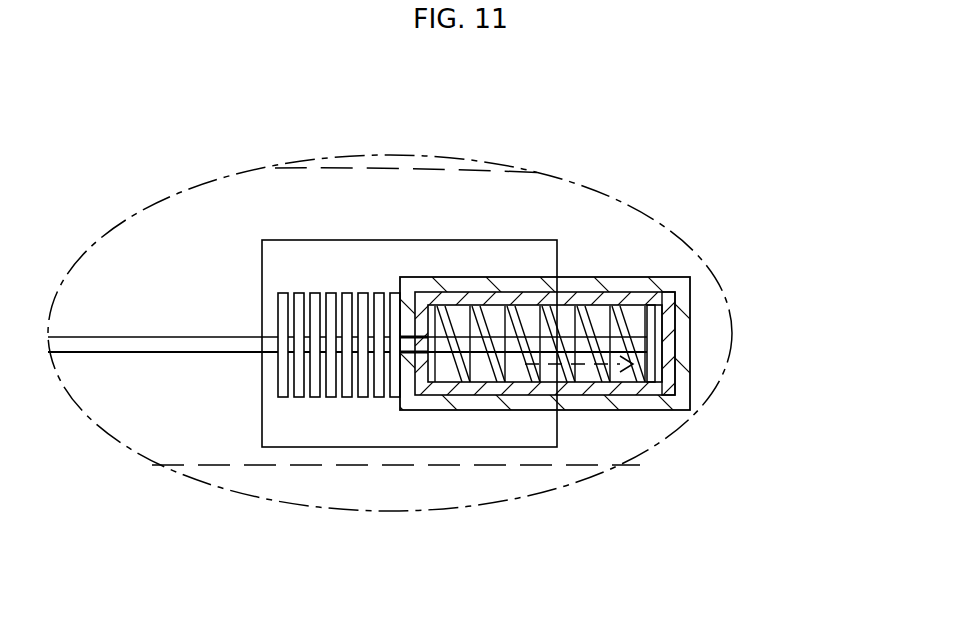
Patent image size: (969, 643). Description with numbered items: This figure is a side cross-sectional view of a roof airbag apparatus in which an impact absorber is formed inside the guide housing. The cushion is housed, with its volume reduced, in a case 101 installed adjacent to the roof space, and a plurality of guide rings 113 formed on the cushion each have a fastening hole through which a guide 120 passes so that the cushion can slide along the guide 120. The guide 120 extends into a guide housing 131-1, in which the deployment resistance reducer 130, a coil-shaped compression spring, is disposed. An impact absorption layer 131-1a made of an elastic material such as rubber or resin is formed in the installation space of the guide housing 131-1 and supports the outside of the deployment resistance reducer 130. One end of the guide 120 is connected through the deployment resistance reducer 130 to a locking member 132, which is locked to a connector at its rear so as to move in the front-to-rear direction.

The case 101 is at (384, 263).
The guide rings 113 is at (318, 398).
The guide 120 is at (151, 342).
The deployment resistance reducer 130 is at (637, 410).
The guide housing 131-1 is at (578, 291).
The impact absorption layer 131-1a is at (663, 303).
The locking member 132 is at (658, 338).